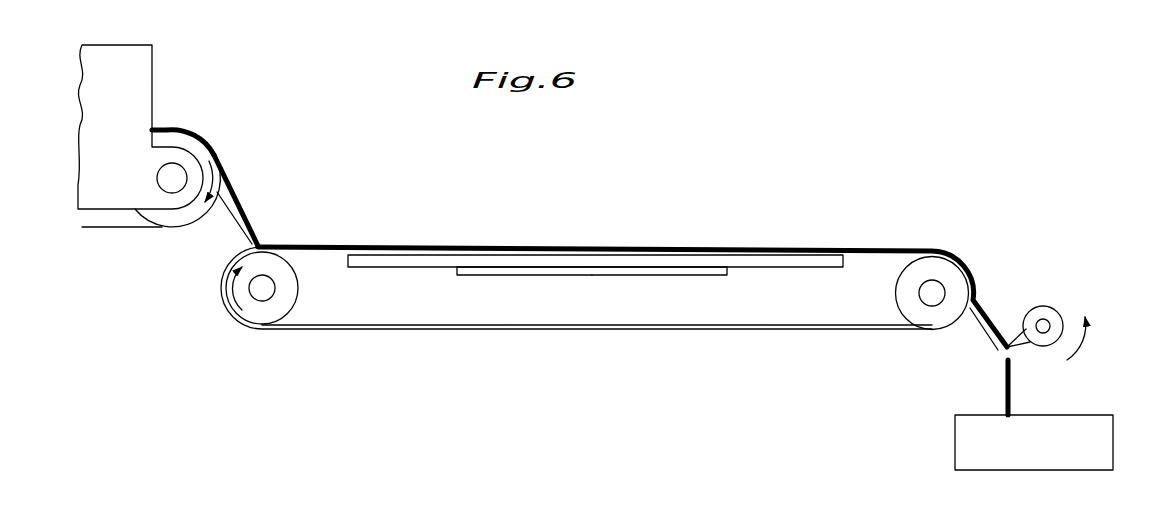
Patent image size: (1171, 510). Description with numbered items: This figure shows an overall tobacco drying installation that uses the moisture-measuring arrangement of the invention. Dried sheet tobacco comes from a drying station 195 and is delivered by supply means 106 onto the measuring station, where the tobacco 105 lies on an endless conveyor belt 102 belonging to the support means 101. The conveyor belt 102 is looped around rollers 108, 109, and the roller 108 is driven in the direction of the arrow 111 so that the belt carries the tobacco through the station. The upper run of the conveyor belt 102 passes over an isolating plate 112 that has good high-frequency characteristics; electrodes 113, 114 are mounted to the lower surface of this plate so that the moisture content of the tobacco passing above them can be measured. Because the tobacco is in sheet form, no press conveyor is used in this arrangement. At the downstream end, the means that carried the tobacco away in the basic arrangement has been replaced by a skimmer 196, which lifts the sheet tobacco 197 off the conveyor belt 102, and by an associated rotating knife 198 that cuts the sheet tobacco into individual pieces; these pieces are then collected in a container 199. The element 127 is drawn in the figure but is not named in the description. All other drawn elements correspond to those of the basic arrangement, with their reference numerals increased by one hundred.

The support means 101 is at (582, 354).
The conveyor belt 102 is at (588, 328).
The tobacco 105 is at (250, 247).
The supply means 106 is at (253, 139).
The roller 108 is at (257, 313).
The roller 109 is at (905, 295).
The arrow 111 is at (235, 288).
The isolating plate 112 is at (788, 264).
The electrode 113 is at (492, 278).
The electrode 114 is at (640, 278).
The upper belt run 127 is at (545, 281).
The drying station 195 is at (177, 107).
The skimmer 196 is at (983, 325).
The sheet tobacco 197 is at (262, 247).
The rotating knife 198 is at (1070, 298).
The container 199 is at (962, 442).